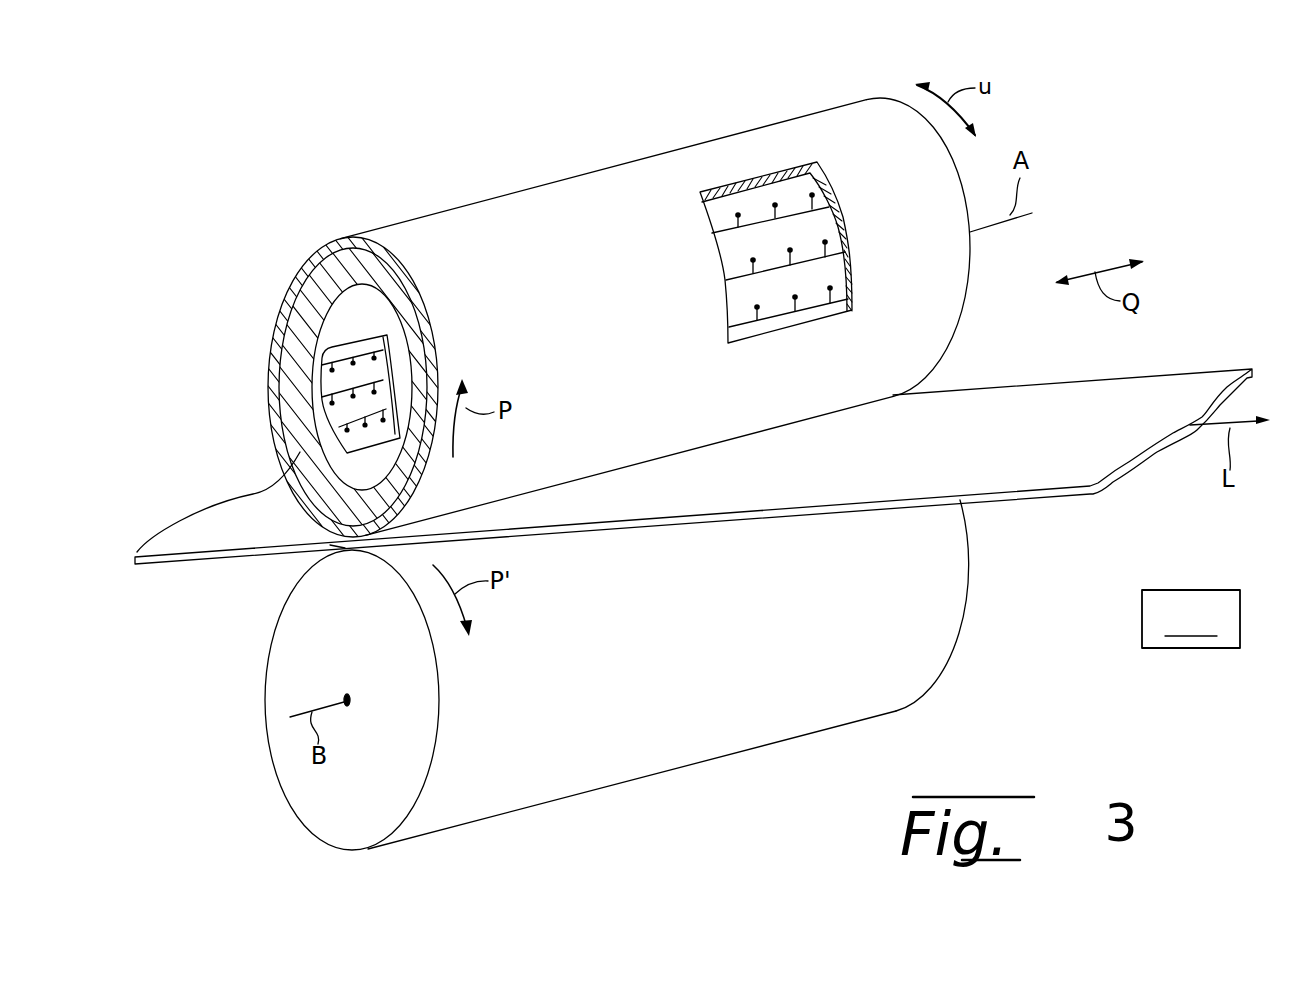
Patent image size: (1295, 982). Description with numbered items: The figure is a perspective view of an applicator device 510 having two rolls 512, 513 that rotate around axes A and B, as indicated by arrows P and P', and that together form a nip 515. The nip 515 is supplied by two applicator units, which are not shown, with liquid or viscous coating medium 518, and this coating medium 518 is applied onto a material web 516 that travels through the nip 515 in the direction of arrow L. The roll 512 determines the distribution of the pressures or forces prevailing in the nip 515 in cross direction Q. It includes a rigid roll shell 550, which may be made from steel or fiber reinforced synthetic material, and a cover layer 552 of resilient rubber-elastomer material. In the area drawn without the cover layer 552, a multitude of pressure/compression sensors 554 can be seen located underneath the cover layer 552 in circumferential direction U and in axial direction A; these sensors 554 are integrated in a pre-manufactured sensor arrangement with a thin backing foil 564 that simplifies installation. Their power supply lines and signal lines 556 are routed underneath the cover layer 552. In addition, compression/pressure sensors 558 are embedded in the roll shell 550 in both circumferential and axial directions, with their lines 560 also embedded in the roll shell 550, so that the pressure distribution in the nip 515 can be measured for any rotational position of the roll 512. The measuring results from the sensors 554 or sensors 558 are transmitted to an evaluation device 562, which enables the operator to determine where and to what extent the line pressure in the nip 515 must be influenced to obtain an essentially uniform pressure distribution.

The applicator device 510 is at (1158, 166).
The roll 512 is at (507, 208).
The roll 513 is at (707, 744).
The nip 515 is at (300, 564).
The material web 516 is at (1038, 496).
The coating medium 518 is at (345, 556).
The roll shell 550 is at (330, 276).
The cover layer 552 is at (348, 236).
The pressure/compression sensors 554 is at (753, 258).
The power supply lines and signal lines 556 is at (848, 240).
The compression/pressure sensors 558 is at (345, 430).
The lines 560 is at (325, 348).
The evaluation device 562 is at (1191, 619).
The backing foil 564 is at (745, 292).